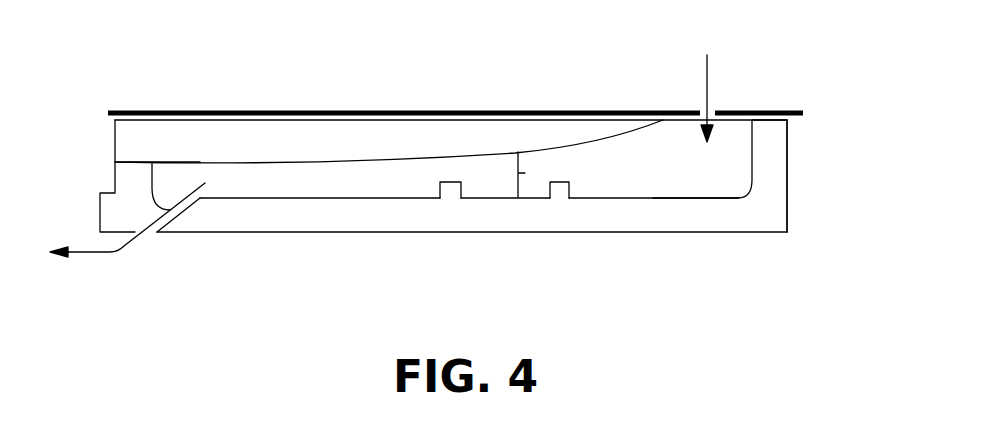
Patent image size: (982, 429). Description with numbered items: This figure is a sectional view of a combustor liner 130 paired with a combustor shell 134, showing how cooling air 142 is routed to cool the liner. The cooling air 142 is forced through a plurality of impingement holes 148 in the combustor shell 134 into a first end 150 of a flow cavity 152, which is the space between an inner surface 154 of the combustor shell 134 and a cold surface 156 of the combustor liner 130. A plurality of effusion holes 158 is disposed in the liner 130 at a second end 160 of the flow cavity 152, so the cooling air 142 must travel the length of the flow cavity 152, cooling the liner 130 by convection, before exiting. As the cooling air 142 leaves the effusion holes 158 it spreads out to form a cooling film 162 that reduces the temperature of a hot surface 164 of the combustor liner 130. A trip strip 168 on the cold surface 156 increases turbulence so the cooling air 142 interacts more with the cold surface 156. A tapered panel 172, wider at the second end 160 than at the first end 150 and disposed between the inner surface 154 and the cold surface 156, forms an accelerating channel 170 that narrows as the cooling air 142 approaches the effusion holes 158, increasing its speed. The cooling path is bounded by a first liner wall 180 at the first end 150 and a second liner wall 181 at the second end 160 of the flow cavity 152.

The combustor liner 130 is at (672, 222).
The combustor shell 134 is at (772, 110).
The cooling air 142 is at (705, 92).
The impingement holes 148 is at (712, 108).
The first end 150 is at (722, 172).
The flow cavity 152 is at (633, 181).
The inner surface 154 is at (227, 118).
The cold surface 156 is at (365, 198).
The effusion holes 158 is at (170, 218).
The second end 160 is at (230, 180).
The cooling film 162 is at (78, 254).
The hot surface 164 is at (362, 233).
The trip strip 168 is at (448, 192).
The accelerating channel 170 is at (524, 177).
The tapered panel 172 is at (137, 142).
The first liner wall 180 is at (775, 163).
The second liner wall 181 is at (135, 198).